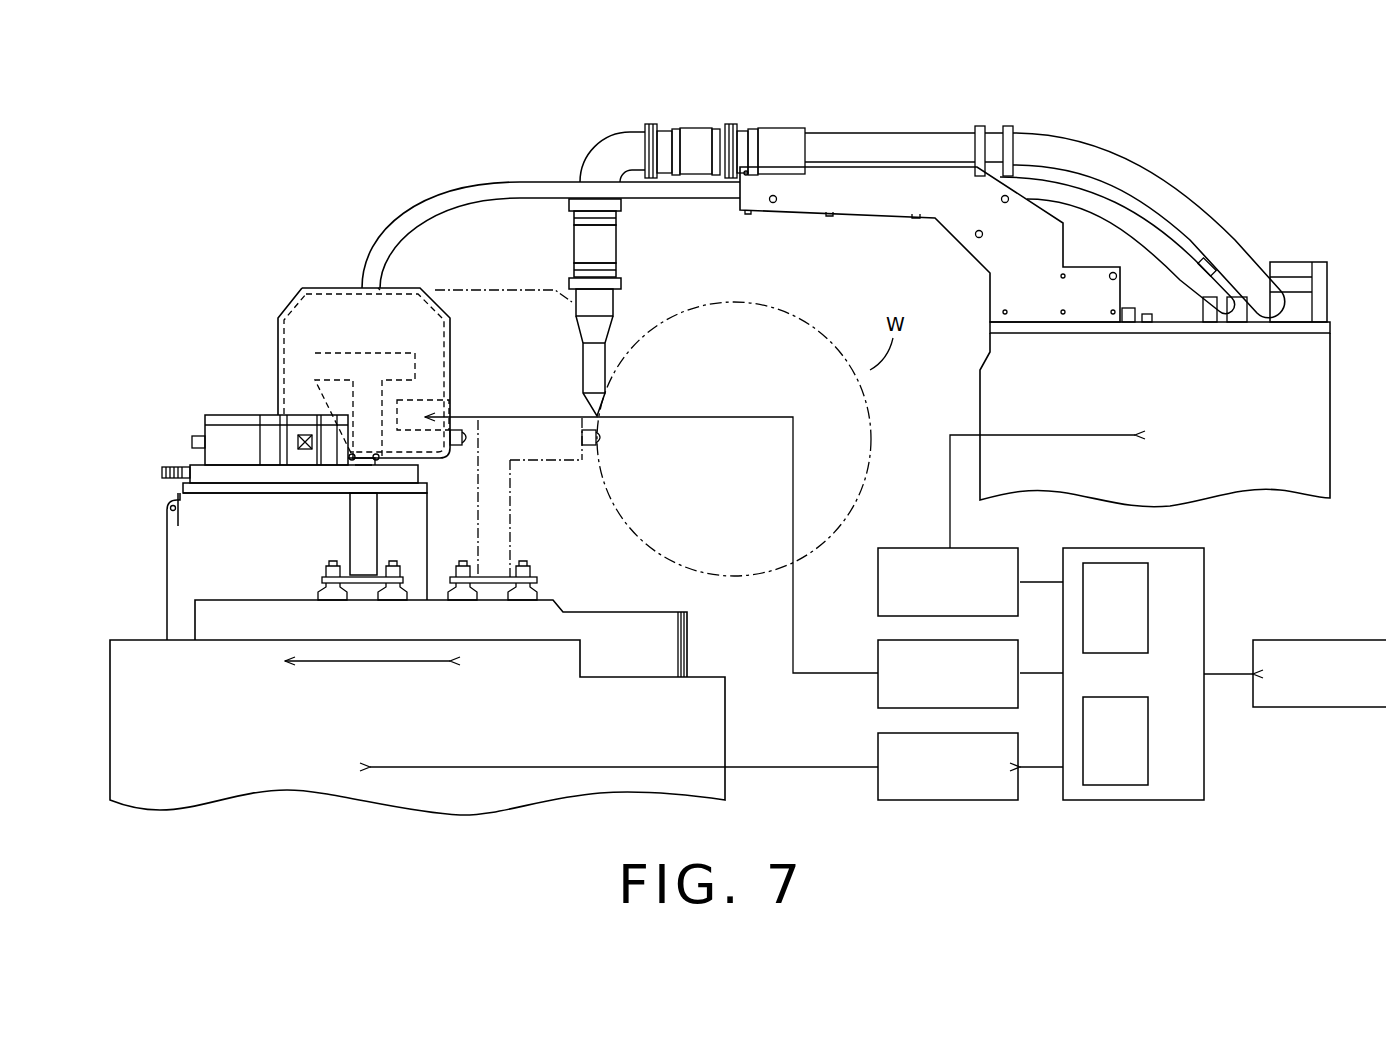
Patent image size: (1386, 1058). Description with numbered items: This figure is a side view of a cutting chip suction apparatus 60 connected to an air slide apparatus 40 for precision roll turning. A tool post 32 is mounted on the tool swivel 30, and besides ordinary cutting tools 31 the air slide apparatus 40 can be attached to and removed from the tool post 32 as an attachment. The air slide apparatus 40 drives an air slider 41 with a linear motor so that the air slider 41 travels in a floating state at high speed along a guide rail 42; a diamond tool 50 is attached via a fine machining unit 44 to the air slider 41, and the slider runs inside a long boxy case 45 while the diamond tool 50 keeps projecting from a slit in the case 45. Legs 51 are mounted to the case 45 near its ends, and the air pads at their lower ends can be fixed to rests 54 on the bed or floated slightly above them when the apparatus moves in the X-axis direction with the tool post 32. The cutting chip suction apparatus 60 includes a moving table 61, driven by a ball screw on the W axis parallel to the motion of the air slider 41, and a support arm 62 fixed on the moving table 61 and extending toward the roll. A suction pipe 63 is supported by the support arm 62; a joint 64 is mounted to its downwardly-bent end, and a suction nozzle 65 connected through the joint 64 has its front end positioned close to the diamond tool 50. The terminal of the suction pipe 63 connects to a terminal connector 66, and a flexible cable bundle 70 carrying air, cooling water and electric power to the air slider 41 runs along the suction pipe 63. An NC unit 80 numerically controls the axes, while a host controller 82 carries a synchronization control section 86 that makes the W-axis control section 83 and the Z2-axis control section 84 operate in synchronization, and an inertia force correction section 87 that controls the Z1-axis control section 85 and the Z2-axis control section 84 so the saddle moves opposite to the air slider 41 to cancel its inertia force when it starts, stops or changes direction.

The tool swivel 30 is at (185, 547).
The cutting tools 31 is at (198, 436).
The tool post 32 is at (232, 432).
The air slide apparatus 40 is at (484, 320).
The air slider 41 is at (335, 305).
The guide rail 42 is at (397, 352).
The fine machining unit 44 is at (445, 397).
The case 45 is at (275, 333).
The diamond tool 50 is at (470, 437).
The legs 51 is at (352, 514).
The rests 54 is at (232, 607).
The cutting chip suction apparatus 60 is at (1062, 299).
The moving table 61 is at (1298, 378).
The support arm 62 is at (815, 205).
The suction pipe 63 is at (920, 145).
The joint 64 is at (580, 245).
The suction nozzle 65 is at (600, 372).
The terminal connector 66 is at (1300, 262).
The flexible cable bundle 70 is at (700, 208).
The NC unit 80 is at (1318, 638).
The host controller 82 is at (1155, 685).
The W-axis control section 83 is at (878, 578).
The Z2-axis control section 84 is at (878, 690).
The Z1-axis control section 85 is at (917, 802).
The synchronization control section 86 is at (1120, 563).
The inertia force correction section 87 is at (1112, 787).